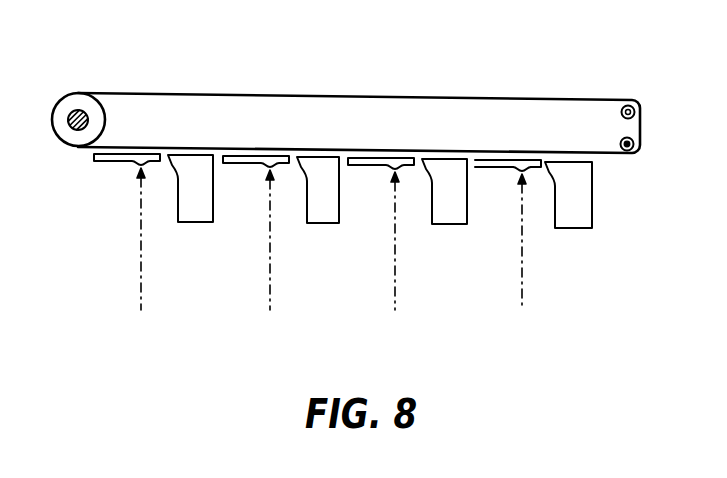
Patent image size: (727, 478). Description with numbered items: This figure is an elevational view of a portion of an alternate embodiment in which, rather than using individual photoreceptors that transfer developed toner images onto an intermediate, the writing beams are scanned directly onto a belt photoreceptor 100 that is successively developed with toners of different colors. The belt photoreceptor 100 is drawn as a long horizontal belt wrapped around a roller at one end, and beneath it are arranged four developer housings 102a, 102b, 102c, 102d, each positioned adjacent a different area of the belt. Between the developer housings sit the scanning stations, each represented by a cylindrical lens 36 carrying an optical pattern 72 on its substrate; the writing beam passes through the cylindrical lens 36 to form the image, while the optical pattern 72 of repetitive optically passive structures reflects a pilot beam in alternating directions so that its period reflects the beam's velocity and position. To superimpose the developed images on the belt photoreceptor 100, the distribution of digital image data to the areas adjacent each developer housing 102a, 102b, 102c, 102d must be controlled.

The belt photoreceptor 100 is at (333, 96).
The optical pattern 72 is at (493, 159).
The cylindrical lens 36 is at (522, 168).
The developer housing 102a is at (187, 222).
The developer housing 102b is at (312, 223).
The developer housing 102c is at (442, 225).
The developer housing 102d is at (563, 228).